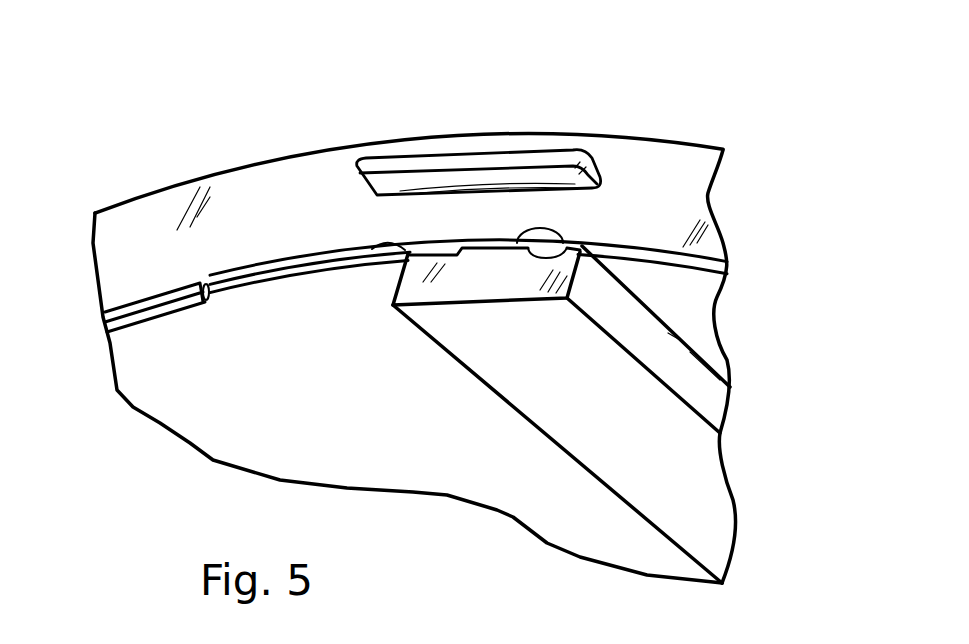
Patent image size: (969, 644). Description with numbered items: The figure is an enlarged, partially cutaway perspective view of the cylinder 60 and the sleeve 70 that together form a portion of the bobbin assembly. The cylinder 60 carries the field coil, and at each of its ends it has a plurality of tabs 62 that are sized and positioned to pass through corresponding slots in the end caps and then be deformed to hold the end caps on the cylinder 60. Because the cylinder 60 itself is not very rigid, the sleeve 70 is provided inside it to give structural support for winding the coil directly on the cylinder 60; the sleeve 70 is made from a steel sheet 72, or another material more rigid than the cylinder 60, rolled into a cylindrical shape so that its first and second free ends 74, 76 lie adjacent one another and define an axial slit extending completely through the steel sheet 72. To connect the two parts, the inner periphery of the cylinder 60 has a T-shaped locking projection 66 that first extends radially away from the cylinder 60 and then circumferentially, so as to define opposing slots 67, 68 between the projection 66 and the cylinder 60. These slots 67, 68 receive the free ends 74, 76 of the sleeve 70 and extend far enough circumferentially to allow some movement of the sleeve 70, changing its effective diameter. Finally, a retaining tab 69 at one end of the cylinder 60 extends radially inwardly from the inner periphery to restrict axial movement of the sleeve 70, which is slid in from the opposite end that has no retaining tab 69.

The cylinder 60 is at (711, 143).
The tab 62 is at (553, 157).
The locking projection 66 is at (547, 405).
The slot 67 is at (362, 255).
The slot 68 is at (510, 248).
The retaining tab 69 is at (170, 296).
The sleeve 70 is at (442, 164).
The steel sheet 72 is at (332, 250).
The first free end 74 is at (579, 250).
The second free end 76 is at (423, 245).